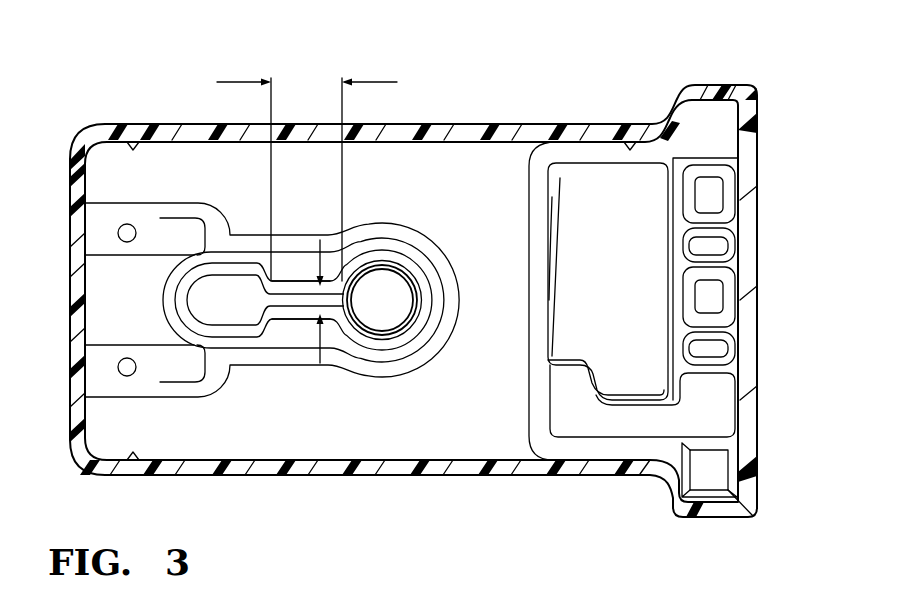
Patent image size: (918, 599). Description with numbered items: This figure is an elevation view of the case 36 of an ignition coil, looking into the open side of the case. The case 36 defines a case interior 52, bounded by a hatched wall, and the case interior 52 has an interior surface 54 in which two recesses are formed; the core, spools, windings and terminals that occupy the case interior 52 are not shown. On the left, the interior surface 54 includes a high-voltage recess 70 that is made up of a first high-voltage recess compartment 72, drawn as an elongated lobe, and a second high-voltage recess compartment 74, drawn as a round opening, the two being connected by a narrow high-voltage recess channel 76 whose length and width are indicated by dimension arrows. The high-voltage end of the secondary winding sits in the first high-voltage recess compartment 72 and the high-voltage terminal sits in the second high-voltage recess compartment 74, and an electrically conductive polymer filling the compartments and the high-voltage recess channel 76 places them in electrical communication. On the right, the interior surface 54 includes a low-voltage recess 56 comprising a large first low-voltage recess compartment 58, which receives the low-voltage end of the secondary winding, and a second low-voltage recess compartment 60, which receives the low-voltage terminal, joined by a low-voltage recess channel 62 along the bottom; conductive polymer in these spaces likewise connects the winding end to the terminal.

The case 36 is at (419, 100).
The second high-voltage recess compartment 74 is at (407, 283).
The high-voltage recess 70 is at (212, 292).
The first high-voltage recess compartment 72 is at (228, 303).
The interior surface 54 is at (256, 393).
The high-voltage recess channel 76 is at (328, 525).
The case interior 52 is at (480, 418).
The first low-voltage recess compartment 58 is at (574, 406).
The low-voltage recess channel 62 is at (643, 424).
The second low-voltage recess compartment 60 is at (713, 390).
The low-voltage recess 56 is at (710, 415).